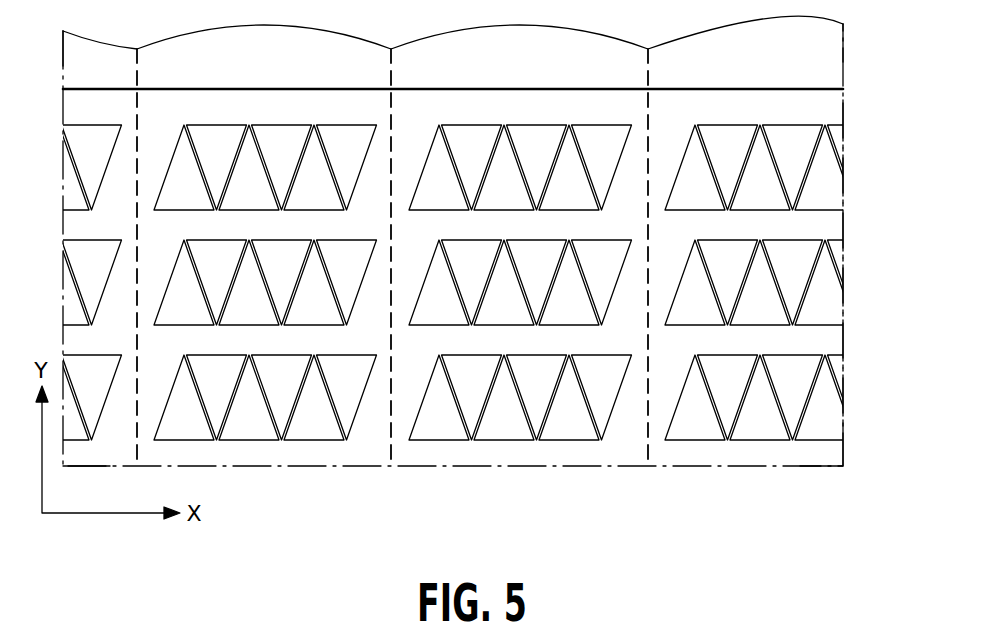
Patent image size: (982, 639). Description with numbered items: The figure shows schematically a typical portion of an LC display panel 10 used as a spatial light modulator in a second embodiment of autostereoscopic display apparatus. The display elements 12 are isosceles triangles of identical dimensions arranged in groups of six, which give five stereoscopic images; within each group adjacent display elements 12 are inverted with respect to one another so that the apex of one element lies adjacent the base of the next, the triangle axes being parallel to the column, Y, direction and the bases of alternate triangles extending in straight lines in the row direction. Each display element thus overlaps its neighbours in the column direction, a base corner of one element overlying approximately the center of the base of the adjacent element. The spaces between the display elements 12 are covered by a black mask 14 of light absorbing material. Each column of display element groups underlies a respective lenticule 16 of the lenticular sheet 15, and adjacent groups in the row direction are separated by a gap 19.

The LC display panel 10 is at (822, 480).
The display elements 12 is at (567, 425).
The black mask 14 is at (831, 218).
The lenticular sheet 15 is at (831, 62).
The lenticule 16 is at (693, 40).
The gap 19 is at (630, 437).